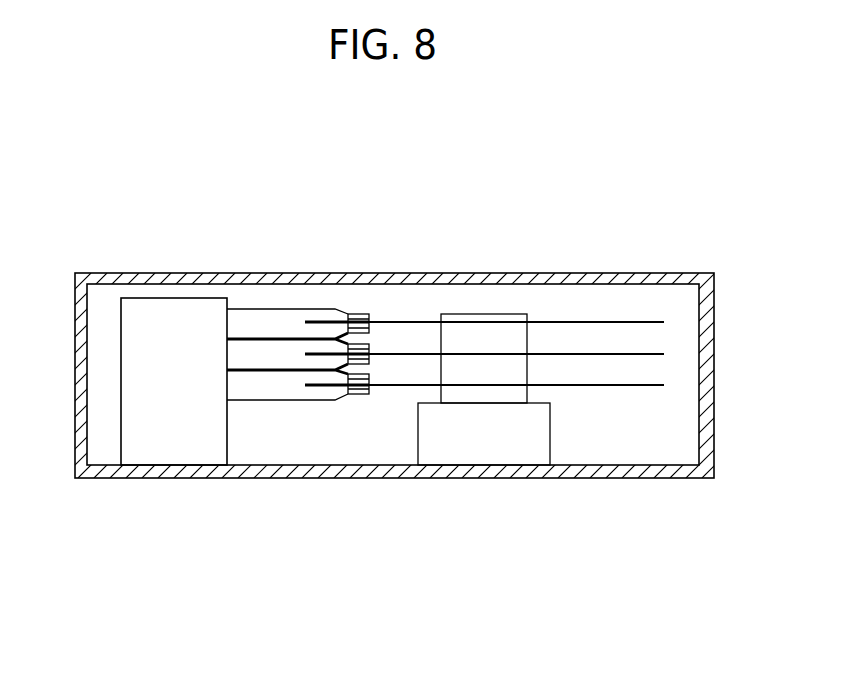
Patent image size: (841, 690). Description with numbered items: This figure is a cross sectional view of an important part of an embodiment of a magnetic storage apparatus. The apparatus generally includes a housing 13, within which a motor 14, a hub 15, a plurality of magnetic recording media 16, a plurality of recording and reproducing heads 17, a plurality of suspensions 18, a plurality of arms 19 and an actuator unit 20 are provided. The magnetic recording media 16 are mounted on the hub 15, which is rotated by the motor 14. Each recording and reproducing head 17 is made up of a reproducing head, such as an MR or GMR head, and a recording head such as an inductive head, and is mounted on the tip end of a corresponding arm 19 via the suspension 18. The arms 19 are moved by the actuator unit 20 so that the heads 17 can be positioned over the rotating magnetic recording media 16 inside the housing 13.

The housing 13 is at (703, 450).
The motor 14 is at (486, 455).
The hub 15 is at (482, 314).
The magnetic recording media 16 is at (597, 322).
The recording and reproducing head 17 is at (367, 312).
The suspension 18 is at (345, 312).
The arm 19 is at (262, 309).
The actuator unit 20 is at (169, 457).